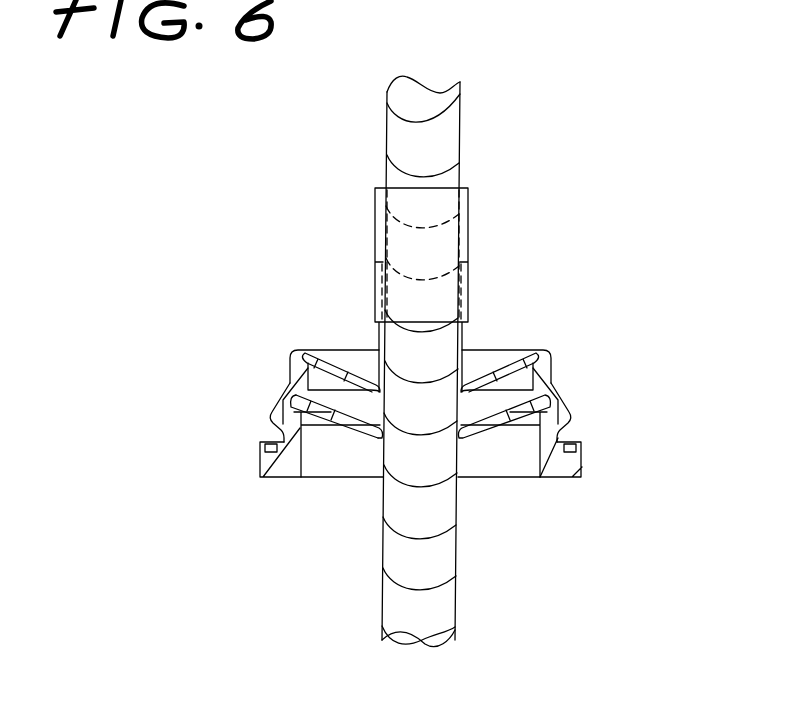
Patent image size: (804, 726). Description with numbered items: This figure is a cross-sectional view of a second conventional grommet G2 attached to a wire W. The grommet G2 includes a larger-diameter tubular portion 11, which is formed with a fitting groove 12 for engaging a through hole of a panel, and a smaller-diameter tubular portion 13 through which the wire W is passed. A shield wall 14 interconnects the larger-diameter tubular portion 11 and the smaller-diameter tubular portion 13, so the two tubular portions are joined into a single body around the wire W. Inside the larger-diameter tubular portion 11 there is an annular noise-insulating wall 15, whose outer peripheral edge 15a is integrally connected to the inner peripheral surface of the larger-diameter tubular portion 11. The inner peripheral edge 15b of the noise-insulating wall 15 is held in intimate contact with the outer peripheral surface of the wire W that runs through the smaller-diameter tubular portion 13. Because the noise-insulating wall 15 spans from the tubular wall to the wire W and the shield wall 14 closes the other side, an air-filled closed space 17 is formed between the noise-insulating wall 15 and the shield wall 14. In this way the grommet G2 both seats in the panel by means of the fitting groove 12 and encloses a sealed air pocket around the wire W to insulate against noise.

The grommet G2 is at (558, 284).
The wire W is at (447, 597).
The larger-diameter tubular portion 11 is at (283, 466).
The fitting groove 12 is at (278, 432).
The smaller-diameter tubular portion 13 is at (464, 346).
The shield wall 14 is at (325, 357).
The noise-insulating wall 15 is at (347, 432).
The outer peripheral edge 15a is at (318, 440).
The inner peripheral edge 15b is at (376, 436).
The closed space 17 is at (497, 398).